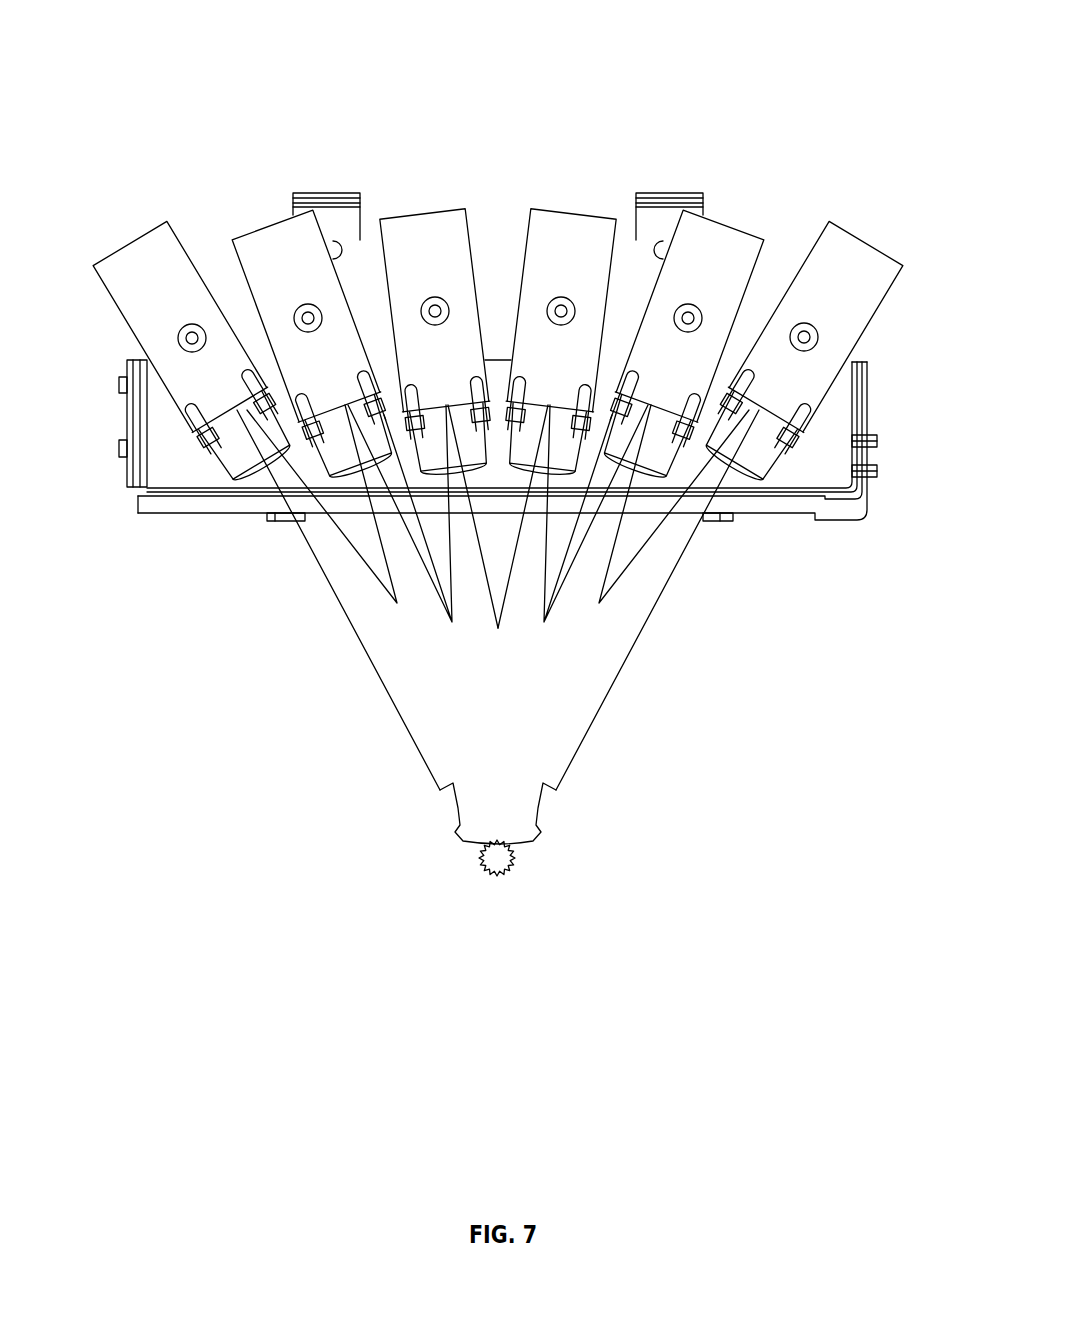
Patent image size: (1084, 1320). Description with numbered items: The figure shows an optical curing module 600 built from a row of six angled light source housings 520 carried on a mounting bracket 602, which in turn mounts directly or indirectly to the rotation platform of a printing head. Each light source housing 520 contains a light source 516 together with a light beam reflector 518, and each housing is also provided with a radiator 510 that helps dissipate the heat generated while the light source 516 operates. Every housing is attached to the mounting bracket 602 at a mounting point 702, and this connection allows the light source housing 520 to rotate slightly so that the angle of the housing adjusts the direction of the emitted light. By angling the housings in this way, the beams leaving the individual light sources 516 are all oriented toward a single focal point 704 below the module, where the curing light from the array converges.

The optical curing module 600 is at (881, 54).
The mounting bracket 602 is at (862, 520).
The radiator 510 is at (857, 346).
The light source 516 is at (237, 408).
The light beam reflector 518 is at (242, 455).
The light source housing 520 is at (424, 200).
The mounting point 702 is at (560, 297).
The focal point 704 is at (479, 856).